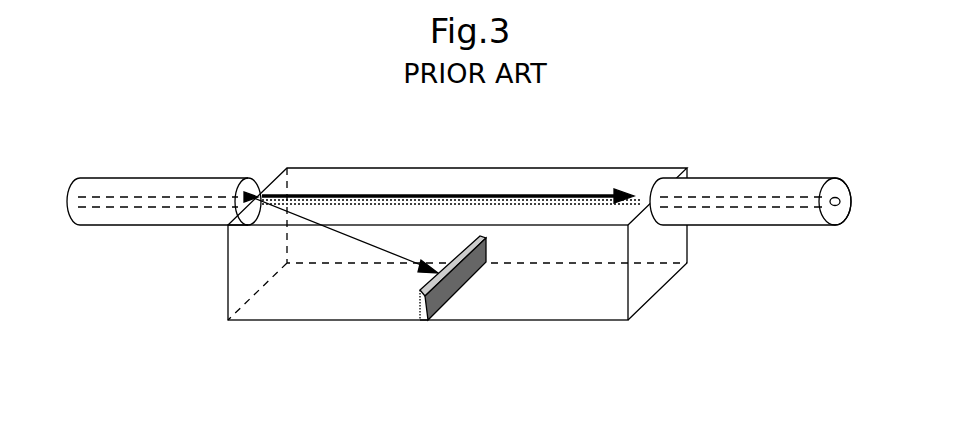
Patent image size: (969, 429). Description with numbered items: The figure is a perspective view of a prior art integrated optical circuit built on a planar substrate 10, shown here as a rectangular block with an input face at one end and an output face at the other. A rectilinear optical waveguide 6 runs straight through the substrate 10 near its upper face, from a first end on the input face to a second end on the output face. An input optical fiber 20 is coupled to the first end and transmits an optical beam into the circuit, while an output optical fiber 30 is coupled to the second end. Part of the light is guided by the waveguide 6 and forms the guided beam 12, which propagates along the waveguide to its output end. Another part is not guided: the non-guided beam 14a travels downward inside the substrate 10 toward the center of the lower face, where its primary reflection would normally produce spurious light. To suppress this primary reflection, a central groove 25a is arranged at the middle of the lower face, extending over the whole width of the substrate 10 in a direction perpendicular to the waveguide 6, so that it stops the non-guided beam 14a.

The planar substrate 10 is at (560, 168).
The rectilinear optical waveguide 6 is at (390, 188).
The guided beam 12 is at (465, 190).
The non-guided beam 14a is at (357, 243).
The central groove 25a is at (428, 320).
The input optical fiber 20 is at (174, 178).
The output optical fiber 30 is at (762, 178).